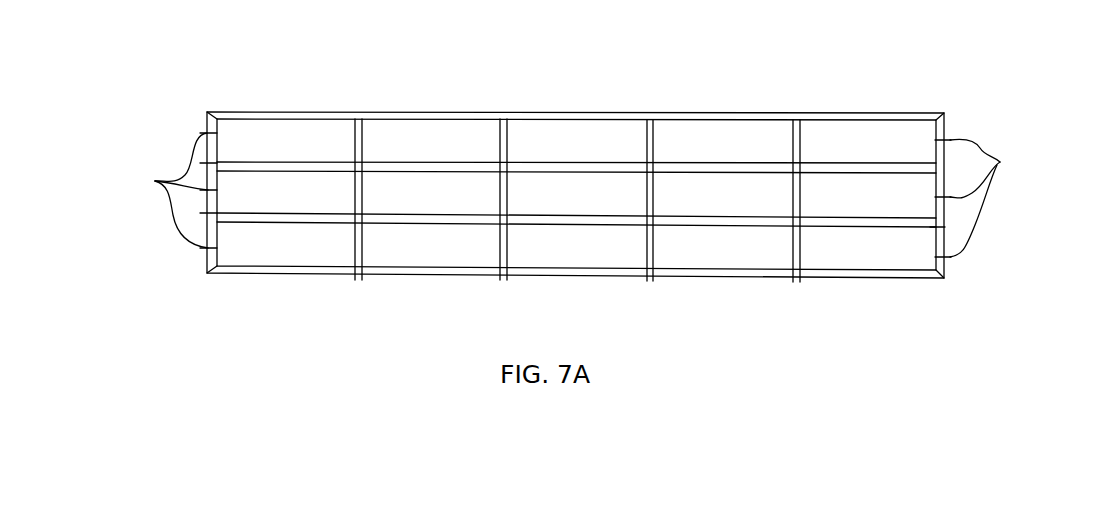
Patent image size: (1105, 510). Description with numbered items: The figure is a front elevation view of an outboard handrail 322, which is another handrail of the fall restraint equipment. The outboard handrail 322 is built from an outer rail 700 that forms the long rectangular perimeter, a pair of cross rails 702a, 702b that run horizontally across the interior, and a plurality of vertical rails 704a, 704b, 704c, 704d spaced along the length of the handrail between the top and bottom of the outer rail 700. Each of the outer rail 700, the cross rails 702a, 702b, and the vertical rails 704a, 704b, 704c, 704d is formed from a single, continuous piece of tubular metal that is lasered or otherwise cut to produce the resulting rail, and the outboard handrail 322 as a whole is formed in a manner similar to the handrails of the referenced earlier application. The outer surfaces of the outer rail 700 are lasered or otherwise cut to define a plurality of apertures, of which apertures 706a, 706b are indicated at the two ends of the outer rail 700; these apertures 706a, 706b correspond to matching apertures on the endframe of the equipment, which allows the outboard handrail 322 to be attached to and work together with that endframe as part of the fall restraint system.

The outboard handrail 322 is at (665, 86).
The outer rail 700 is at (300, 113).
The cross rail 702a is at (413, 172).
The cross rail 702b is at (540, 218).
The vertical rail 704a is at (359, 153).
The vertical rail 704b is at (503, 154).
The vertical rail 704c is at (650, 154).
The vertical rail 704d is at (801, 152).
The aperture 706a is at (995, 198).
The aperture 706b is at (158, 190).